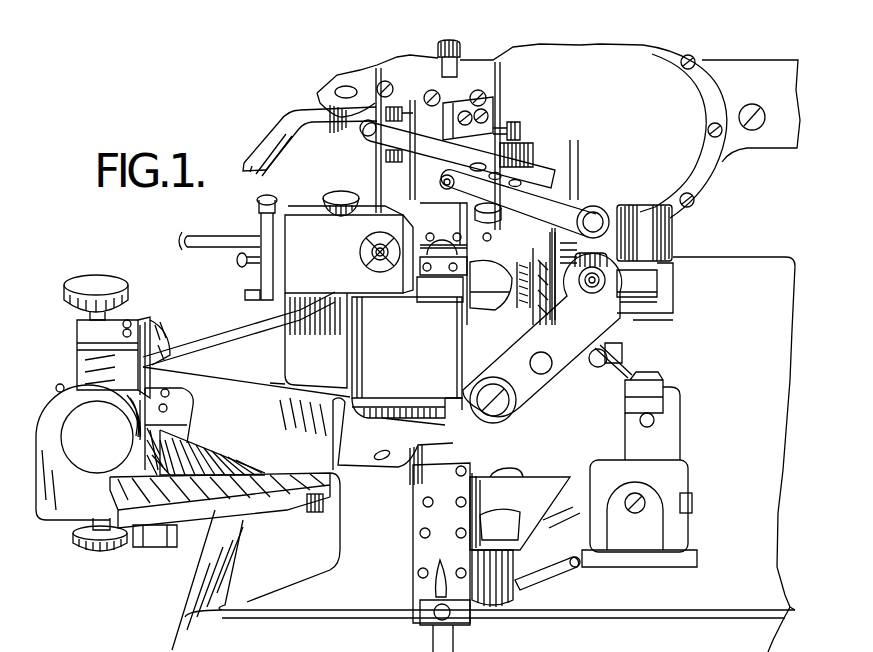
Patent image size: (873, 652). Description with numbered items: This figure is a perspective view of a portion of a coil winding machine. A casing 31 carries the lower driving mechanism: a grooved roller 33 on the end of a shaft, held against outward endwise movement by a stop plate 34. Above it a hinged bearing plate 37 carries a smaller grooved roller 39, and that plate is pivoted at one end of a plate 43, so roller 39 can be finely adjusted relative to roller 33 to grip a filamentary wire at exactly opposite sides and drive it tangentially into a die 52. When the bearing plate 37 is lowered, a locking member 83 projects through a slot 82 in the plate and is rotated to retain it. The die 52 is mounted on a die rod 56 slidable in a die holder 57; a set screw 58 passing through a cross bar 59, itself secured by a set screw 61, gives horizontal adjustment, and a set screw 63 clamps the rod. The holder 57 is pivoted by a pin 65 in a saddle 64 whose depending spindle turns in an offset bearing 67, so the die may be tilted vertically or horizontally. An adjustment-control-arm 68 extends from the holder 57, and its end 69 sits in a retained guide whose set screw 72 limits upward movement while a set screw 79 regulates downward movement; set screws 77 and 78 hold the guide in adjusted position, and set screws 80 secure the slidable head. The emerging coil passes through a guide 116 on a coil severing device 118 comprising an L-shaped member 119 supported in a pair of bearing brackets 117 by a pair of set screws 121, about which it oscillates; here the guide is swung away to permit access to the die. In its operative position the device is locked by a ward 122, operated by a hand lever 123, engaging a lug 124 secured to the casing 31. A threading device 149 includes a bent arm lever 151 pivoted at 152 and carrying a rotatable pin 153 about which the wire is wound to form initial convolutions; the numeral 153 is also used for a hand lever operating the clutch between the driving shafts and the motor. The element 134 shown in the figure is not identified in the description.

The casing 31 is at (537, 260).
The grooved roller 33 is at (492, 238).
The stop plate 34 is at (467, 257).
The hinged bearing plate 37 is at (553, 150).
The grooved roller 39 is at (463, 185).
The plate 43 is at (500, 296).
The die 52 is at (424, 233).
The die rod 56 is at (232, 236).
The die holder 57 is at (303, 210).
The set screw 58 is at (238, 270).
The cross bar 59 is at (292, 268).
The set screw 61 is at (272, 201).
The set screw 63 is at (342, 191).
The saddle 64 is at (325, 278).
The pin 65 is at (383, 262).
The offset bearing 67 is at (425, 382).
The adjustment-control-arm 68 is at (267, 377).
The end of adjustment-control-arm 69 is at (70, 362).
The set screw 72 is at (107, 280).
The set screw 77 is at (160, 322).
The set screw 78 is at (75, 450).
The set screw 79 is at (110, 550).
The set screws 80 is at (168, 548).
The slot 82 is at (578, 153).
The locking member 83 is at (480, 143).
The guide 116 is at (433, 600).
The bearing bracket 117 is at (667, 480).
The coil severing device 118 is at (379, 602).
The L-shaped member 119 is at (576, 568).
The set screw 121 is at (693, 508).
The ward 122 is at (513, 517).
The hand lever 123 is at (540, 583).
The lug 124 is at (475, 303).
The knob 134 is at (614, 207).
The threading device 149 is at (560, 373).
The bent arm lever 151 is at (620, 323).
The pivot 152 is at (500, 413).
The rotatable pin 153 is at (265, 133).